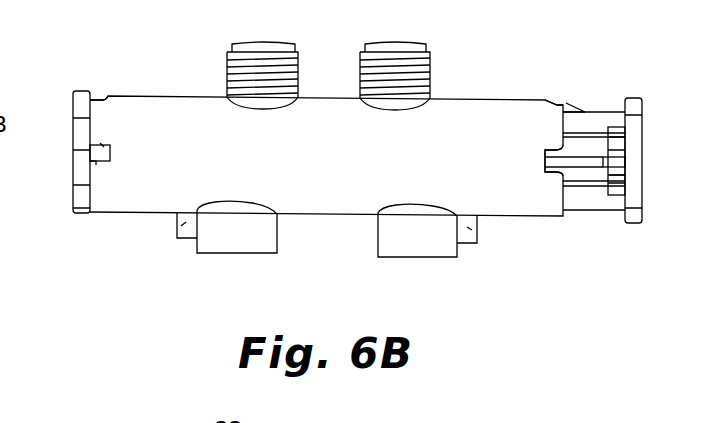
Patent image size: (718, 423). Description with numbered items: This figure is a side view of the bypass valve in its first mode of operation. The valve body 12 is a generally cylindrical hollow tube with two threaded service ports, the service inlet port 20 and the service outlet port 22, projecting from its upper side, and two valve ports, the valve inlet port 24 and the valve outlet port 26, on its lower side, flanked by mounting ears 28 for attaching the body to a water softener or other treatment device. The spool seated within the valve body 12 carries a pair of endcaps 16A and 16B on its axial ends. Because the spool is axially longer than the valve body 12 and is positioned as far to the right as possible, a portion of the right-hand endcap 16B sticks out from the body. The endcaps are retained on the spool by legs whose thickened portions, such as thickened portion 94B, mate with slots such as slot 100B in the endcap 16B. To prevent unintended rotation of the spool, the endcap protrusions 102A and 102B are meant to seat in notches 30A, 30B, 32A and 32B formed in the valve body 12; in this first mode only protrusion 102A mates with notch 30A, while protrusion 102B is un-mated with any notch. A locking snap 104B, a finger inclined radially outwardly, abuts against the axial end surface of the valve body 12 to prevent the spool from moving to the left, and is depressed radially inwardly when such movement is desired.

The valve body 12 is at (335, 215).
The endcap 16A is at (78, 213).
The endcap 16B is at (645, 209).
The service inlet port 20 is at (427, 50).
The service outlet port 22 is at (230, 53).
The valve inlet port 24 is at (220, 255).
The valve outlet port 26 is at (445, 258).
The ears 28 is at (182, 232).
The notch 30A is at (110, 153).
The notch 30B is at (545, 162).
The notch 32A is at (103, 96).
The notch 32B is at (555, 100).
The thickened portion 94B is at (618, 148).
The slot 100B is at (625, 178).
The endcap protrusion 102A is at (100, 143).
The endcap protrusion 102B is at (613, 162).
The locking snap 104B is at (578, 100).